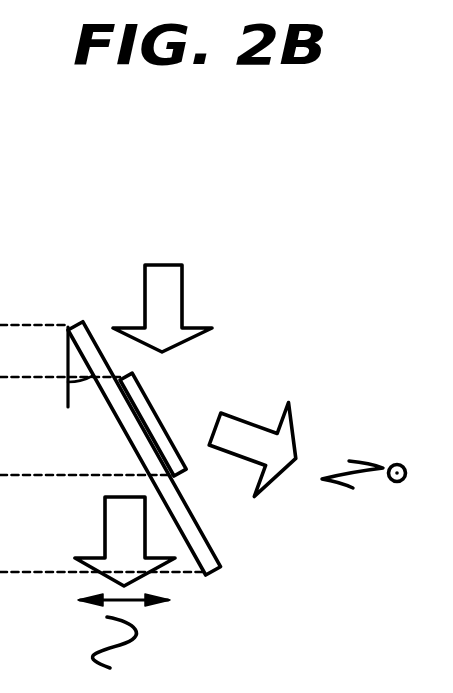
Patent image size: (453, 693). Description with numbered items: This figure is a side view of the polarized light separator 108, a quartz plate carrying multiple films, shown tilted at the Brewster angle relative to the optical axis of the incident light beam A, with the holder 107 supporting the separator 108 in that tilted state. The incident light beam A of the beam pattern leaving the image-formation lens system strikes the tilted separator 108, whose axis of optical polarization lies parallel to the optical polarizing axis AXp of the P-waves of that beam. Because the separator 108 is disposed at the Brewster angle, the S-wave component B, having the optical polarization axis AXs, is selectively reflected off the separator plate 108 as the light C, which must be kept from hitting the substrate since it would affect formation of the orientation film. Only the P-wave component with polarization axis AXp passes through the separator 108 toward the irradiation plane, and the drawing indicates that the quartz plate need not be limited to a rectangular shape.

The holder 107 is at (95, 338).
The polarized light separator 108 is at (164, 428).
The incident light beam A is at (183, 290).
The S-wave component B is at (104, 522).
The light of S-wave polarized light component C is at (251, 424).
The optical polarization axis of S-waves AXs is at (397, 462).
The optical polarization axis of P-waves AXp is at (158, 603).